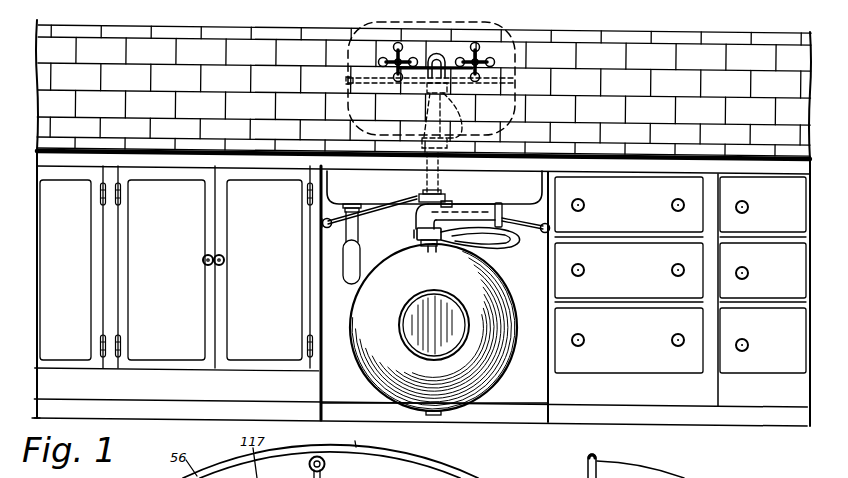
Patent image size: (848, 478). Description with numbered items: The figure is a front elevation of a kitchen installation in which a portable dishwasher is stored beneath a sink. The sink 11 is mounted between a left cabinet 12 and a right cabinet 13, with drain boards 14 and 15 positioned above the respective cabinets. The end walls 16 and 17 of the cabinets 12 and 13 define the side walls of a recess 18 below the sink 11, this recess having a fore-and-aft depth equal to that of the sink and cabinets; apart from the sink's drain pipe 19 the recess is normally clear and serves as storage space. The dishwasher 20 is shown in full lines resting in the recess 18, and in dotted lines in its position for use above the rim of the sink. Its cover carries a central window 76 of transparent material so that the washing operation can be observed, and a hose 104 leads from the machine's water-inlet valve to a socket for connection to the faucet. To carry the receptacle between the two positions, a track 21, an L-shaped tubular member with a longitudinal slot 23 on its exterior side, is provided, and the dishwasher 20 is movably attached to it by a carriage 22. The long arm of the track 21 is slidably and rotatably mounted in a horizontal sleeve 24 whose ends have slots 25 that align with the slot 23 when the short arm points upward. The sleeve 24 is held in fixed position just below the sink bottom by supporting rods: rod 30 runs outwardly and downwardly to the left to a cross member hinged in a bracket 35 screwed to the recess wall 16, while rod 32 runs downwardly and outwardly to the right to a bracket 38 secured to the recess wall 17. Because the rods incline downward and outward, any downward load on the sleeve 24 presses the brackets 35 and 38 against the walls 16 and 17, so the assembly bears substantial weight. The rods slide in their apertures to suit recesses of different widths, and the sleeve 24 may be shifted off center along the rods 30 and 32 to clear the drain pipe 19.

The sink 11 is at (331, 192).
The cabinet 12 is at (272, 395).
The cabinet 13 is at (671, 396).
The drain board 14 is at (219, 147).
The drain board 15 is at (665, 150).
The end wall 16 is at (331, 387).
The end wall 17 is at (544, 395).
The recess 18 is at (513, 413).
The drain pipe 19 is at (342, 244).
The dishwasher 20 is at (518, 41).
The track 21 is at (451, 199).
The carriage 22 is at (418, 228).
The slot 23 is at (482, 206).
The horizontal sleeve 24 is at (419, 197).
The slots 25 is at (442, 234).
The supporting rod 30 is at (371, 216).
The supporting rod 32 is at (518, 222).
The bracket 35 is at (322, 222).
The bracket 38 is at (549, 228).
The central window 76 is at (414, 318).
The hose 104 is at (508, 241).